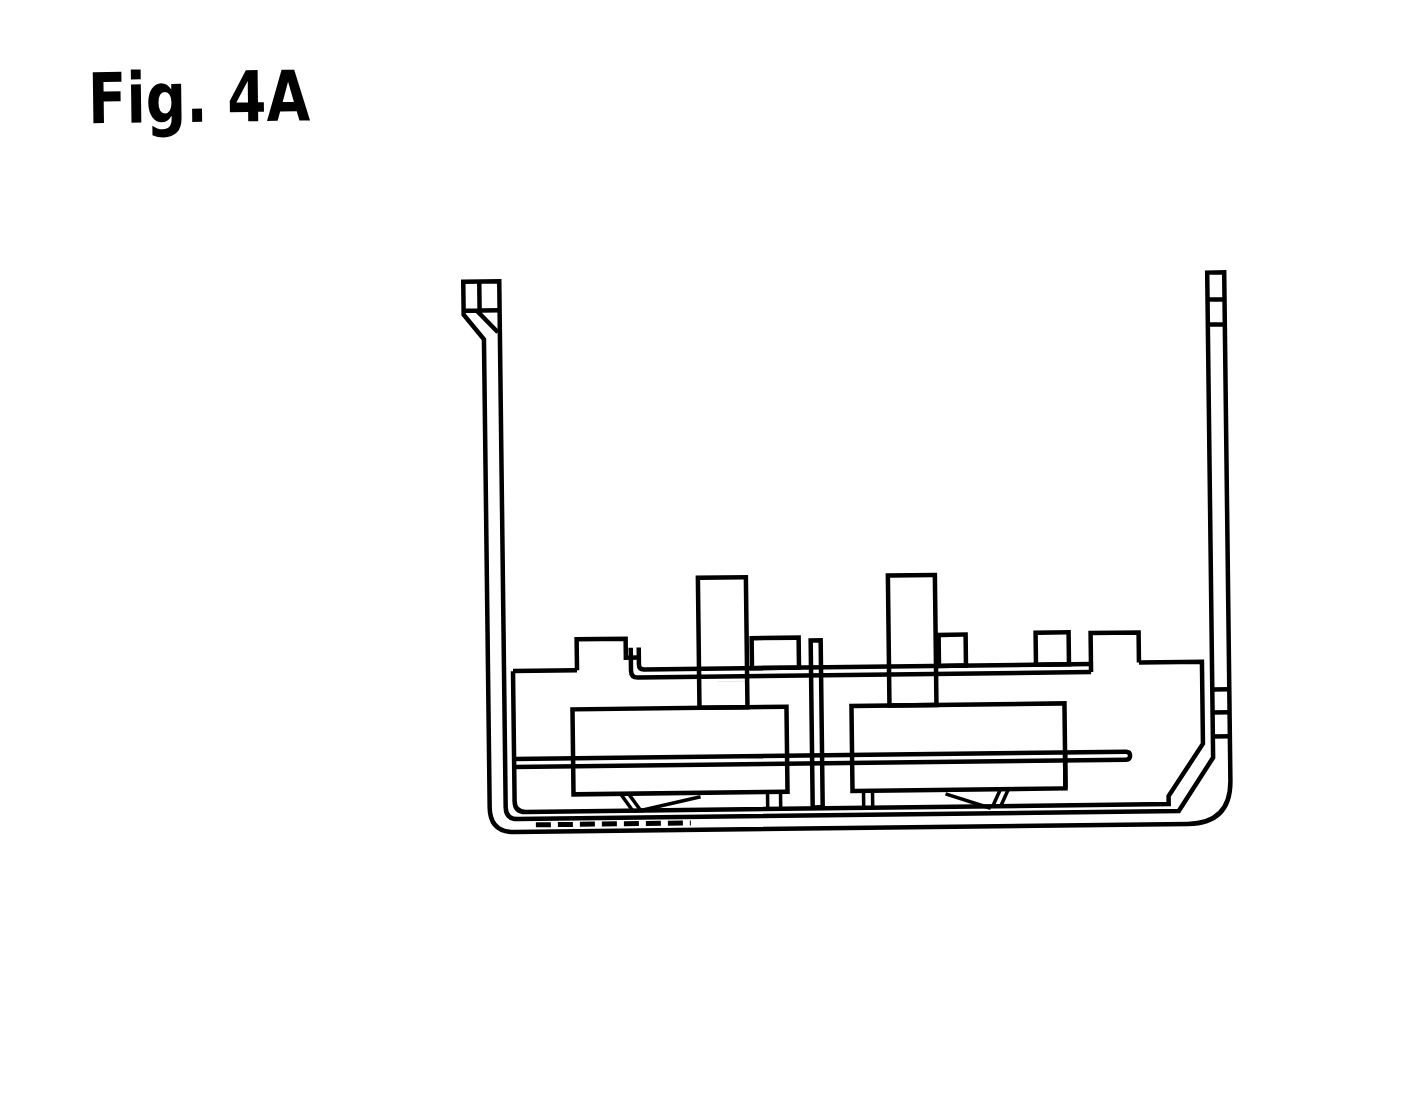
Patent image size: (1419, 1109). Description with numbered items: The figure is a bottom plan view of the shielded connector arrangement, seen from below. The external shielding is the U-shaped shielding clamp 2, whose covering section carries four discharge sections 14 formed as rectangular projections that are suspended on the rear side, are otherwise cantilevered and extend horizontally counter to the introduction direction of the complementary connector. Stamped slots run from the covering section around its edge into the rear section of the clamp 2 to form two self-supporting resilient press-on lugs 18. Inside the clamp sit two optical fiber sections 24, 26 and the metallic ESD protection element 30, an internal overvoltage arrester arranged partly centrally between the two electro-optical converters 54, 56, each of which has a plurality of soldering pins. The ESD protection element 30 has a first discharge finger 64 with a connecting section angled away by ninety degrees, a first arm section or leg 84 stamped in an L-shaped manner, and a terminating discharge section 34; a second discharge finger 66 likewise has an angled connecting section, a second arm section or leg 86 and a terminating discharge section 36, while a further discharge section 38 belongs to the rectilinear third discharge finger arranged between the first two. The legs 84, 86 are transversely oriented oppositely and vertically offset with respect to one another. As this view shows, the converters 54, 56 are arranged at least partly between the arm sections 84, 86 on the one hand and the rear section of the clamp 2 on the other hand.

The shielding clamp 2 is at (1230, 604).
The discharge section 14 is at (606, 636).
The press-on lug 18 is at (721, 800).
The optical fiber section 24 is at (904, 576).
The optical fiber section 26 is at (740, 576).
The ESD protection element 30 is at (824, 806).
The discharge section 34 is at (1052, 635).
The discharge section 36 is at (649, 648).
The discharge section 38 is at (823, 640).
The electro-optical converter 54 is at (1066, 778).
The electro-optical converter 56 is at (573, 777).
The first discharge finger 64 is at (1021, 675).
The second discharge finger 66 is at (670, 675).
The first arm section 84 is at (1004, 667).
The second arm section 86 is at (719, 680).